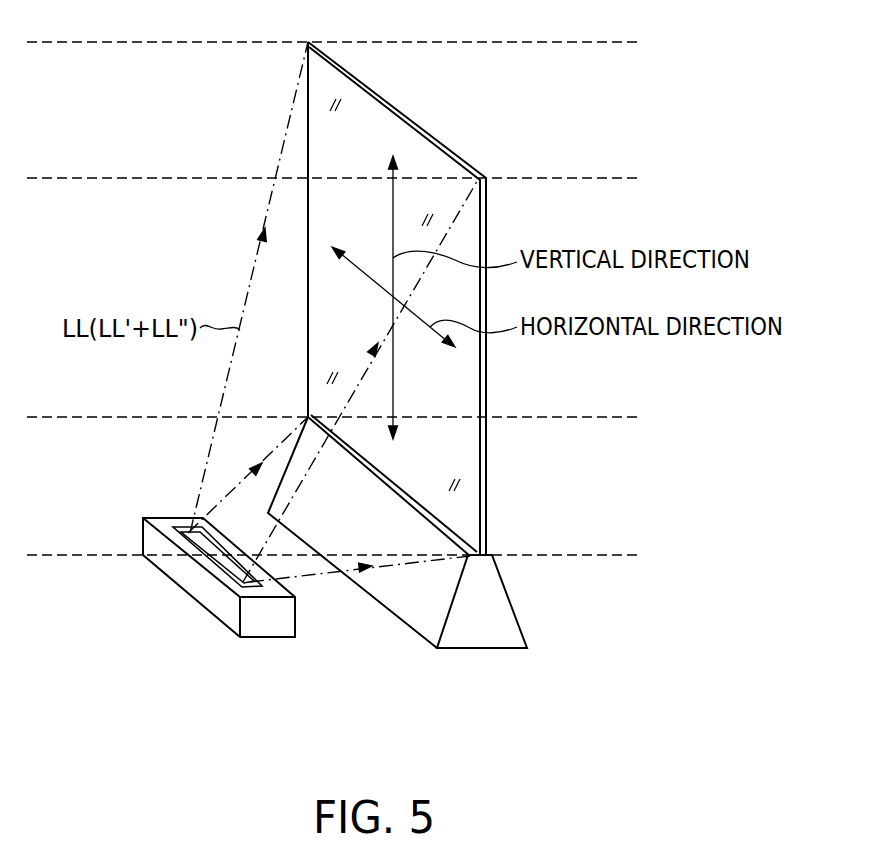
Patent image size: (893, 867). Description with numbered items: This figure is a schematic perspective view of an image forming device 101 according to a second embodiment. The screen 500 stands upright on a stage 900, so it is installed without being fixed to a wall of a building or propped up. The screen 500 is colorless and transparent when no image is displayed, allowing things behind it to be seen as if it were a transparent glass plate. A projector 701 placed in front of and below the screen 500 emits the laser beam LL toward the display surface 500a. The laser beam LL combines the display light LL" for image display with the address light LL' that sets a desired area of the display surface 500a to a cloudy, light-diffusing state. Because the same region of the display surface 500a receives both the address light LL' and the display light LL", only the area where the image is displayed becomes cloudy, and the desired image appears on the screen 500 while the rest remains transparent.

The image forming device 101 is at (208, 262).
The screen 500 is at (424, 115).
The display surface 500a is at (463, 388).
The projector 701 is at (270, 630).
The stage 900 is at (485, 640).